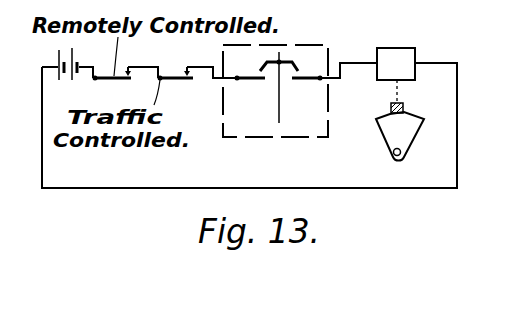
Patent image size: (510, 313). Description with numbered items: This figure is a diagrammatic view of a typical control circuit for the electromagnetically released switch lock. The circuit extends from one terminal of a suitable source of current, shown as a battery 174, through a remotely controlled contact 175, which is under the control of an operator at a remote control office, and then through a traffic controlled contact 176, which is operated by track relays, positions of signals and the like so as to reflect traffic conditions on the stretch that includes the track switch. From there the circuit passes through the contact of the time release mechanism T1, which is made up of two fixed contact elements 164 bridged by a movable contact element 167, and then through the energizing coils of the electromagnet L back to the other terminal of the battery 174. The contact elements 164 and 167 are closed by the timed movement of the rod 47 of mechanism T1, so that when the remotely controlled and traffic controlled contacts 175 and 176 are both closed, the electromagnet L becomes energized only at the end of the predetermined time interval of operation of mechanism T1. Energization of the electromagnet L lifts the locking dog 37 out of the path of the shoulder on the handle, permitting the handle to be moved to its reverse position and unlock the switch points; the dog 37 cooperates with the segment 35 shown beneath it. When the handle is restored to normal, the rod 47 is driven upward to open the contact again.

The battery 174 is at (72, 51).
The contact 175 is at (124, 68).
The contact 176 is at (176, 80).
The mechanism T1 is at (300, 39).
The contact element 167 is at (302, 57).
The rod 47 is at (278, 123).
The contact elements 164 is at (255, 81).
The electromagnet L is at (405, 52).
The dog 37 is at (391, 107).
The segment 35 is at (382, 133).